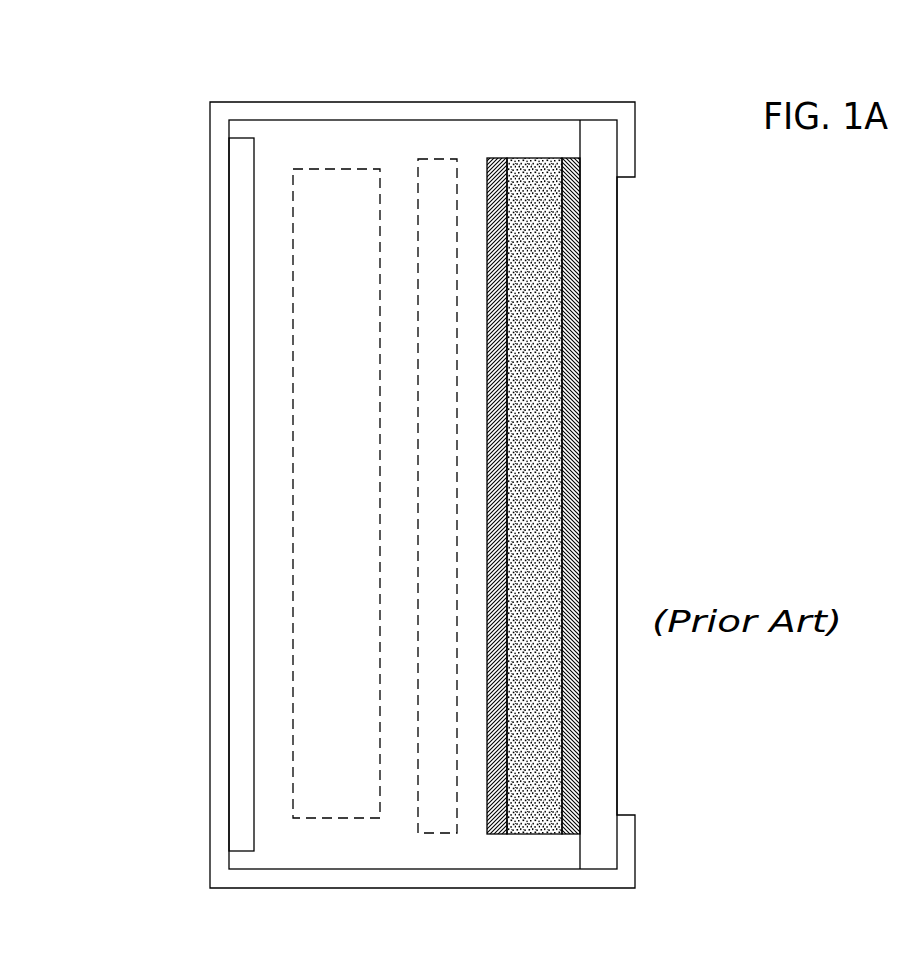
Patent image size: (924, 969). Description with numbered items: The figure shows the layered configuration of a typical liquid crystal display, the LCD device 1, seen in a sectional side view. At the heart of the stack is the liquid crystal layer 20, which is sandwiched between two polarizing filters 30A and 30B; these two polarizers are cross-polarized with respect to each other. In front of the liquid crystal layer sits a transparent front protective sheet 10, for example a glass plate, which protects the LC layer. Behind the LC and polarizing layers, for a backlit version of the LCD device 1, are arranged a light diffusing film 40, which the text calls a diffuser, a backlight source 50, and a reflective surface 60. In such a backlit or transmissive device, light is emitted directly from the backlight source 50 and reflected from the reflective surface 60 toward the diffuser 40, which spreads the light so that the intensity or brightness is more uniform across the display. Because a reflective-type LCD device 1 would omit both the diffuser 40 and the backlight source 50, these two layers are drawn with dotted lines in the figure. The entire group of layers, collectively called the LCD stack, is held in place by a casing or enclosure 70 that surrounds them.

The LCD device 1 is at (139, 101).
The transparent front protective sheet 10 is at (617, 495).
The liquid crystal layer 20 is at (537, 745).
The polarizing filter 30A is at (580, 312).
The polarizing filter 30B is at (498, 158).
The light diffusing film 40 is at (437, 57).
The backlight source 50 is at (267, 65).
The reflective surface 60 is at (238, 640).
The casing or enclosure 70 is at (210, 532).